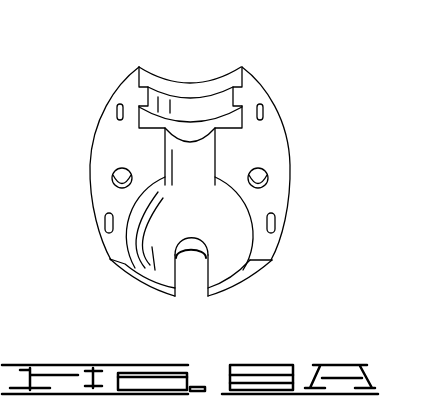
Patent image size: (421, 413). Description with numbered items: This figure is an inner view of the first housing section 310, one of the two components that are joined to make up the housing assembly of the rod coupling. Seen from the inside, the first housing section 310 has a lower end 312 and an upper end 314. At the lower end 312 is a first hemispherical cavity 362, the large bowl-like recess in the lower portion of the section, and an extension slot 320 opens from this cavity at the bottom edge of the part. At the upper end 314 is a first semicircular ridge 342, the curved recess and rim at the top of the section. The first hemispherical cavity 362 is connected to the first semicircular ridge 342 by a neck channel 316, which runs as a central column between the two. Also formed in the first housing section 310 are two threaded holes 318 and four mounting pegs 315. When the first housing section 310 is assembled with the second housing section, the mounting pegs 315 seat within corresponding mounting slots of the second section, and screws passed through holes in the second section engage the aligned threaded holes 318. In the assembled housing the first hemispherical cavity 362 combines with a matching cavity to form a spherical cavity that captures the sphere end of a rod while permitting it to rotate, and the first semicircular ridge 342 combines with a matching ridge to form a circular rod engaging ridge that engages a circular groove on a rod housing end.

The first housing section 310 is at (262, 80).
The lower end 312 is at (127, 275).
The upper end 314 is at (132, 72).
The mounting pegs 315 is at (104, 218).
The neck channel 316 is at (187, 158).
The threaded holes 318 is at (262, 168).
The extension slot 320 is at (193, 278).
The first semicircular ridge 342 is at (188, 110).
The first hemispherical cavity 362 is at (232, 248).